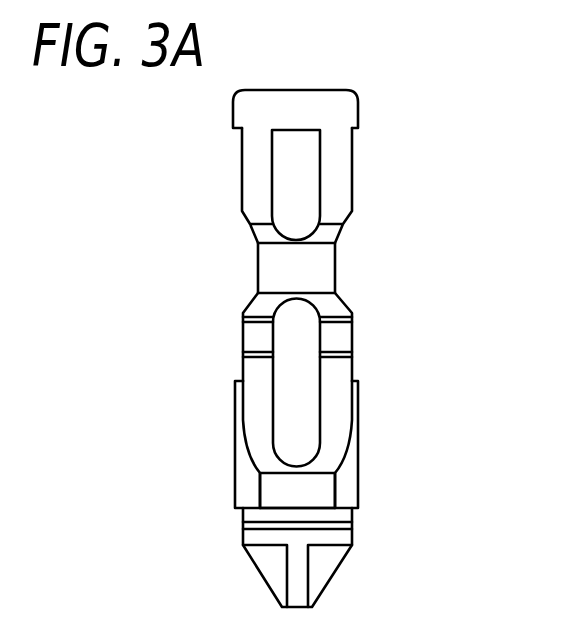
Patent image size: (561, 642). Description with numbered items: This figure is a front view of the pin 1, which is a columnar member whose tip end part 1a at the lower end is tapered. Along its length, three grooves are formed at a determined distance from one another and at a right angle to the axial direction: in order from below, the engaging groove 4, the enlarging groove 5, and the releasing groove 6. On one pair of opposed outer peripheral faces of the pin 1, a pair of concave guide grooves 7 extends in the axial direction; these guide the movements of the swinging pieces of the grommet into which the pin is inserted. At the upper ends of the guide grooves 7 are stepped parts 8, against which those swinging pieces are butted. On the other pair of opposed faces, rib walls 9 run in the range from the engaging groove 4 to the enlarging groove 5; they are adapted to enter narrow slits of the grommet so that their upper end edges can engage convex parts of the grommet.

The pin 1 is at (420, 228).
The tip end part 1a is at (258, 545).
The engaging groove 4 is at (312, 490).
The enlarging groove 5 is at (344, 337).
The releasing groove 6 is at (310, 262).
The guide grooves 7 is at (292, 168).
The stepped parts 8 is at (296, 131).
The rib walls 9 is at (238, 468).